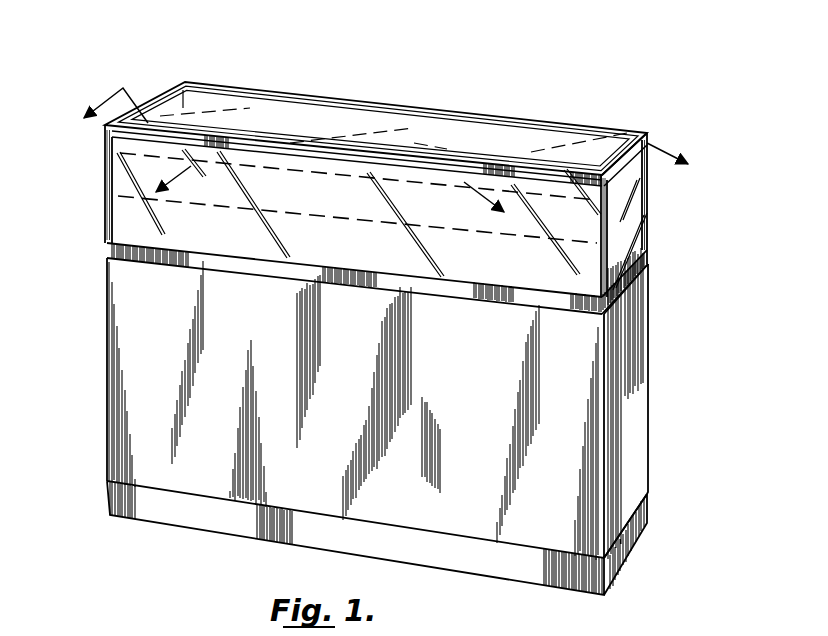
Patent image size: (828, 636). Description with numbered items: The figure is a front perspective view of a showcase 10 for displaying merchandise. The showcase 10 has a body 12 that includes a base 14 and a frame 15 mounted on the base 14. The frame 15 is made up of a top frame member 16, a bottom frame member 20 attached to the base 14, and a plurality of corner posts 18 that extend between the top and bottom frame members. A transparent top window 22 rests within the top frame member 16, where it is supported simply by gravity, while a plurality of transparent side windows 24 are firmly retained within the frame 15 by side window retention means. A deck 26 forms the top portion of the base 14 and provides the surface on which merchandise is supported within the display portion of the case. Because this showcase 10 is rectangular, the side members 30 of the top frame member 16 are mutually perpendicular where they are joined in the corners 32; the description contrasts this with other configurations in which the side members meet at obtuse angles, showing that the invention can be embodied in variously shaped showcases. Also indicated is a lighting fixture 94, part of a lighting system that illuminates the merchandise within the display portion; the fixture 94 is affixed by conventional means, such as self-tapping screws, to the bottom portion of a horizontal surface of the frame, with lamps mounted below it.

The showcase 10 is at (440, 75).
The body 12 is at (655, 373).
The base 14 is at (639, 423).
The frame 15 is at (103, 200).
The top frame member 16 is at (553, 120).
The corner posts 18 is at (648, 226).
The bottom frame member 20 is at (177, 262).
The transparent top window 22 is at (298, 116).
The transparent side windows 24 is at (258, 235).
The deck 26 is at (503, 257).
The side members 30 is at (481, 113).
The corners 32 is at (648, 130).
The lighting fixture 94 is at (601, 198).